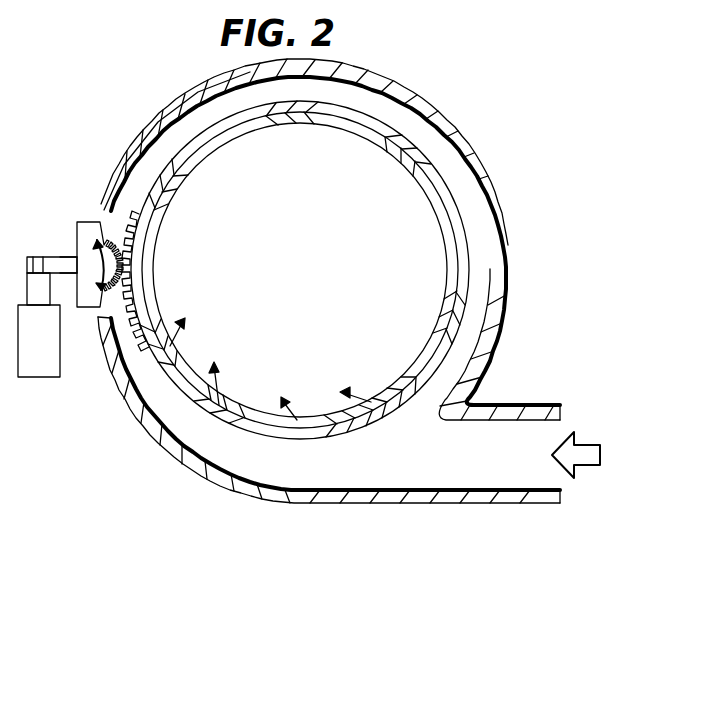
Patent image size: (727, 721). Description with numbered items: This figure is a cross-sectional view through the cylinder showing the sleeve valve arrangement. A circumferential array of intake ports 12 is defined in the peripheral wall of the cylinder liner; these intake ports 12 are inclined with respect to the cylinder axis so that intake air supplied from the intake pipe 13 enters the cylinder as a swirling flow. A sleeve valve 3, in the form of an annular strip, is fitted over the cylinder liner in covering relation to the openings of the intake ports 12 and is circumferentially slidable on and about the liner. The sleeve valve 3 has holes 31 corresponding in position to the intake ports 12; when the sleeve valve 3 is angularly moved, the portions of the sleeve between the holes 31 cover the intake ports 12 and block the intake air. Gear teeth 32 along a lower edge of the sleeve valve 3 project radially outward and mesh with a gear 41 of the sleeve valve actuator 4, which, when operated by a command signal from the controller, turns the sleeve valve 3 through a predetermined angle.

The sleeve valve 3 is at (457, 218).
The holes 31 is at (465, 282).
The gear teeth 32 is at (118, 208).
The gear 41 is at (84, 250).
The sleeve valve actuator 4 is at (34, 376).
The intake ports 12 is at (146, 262).
The intake pipe 13 is at (590, 444).